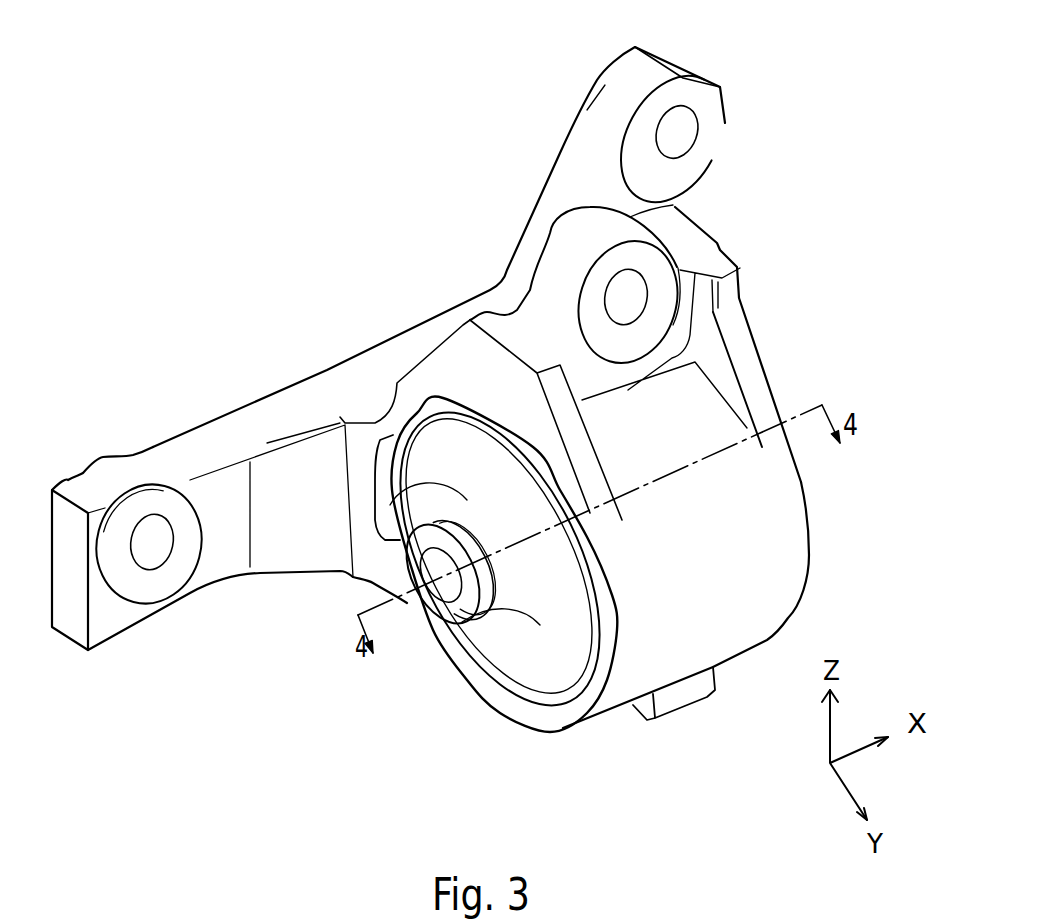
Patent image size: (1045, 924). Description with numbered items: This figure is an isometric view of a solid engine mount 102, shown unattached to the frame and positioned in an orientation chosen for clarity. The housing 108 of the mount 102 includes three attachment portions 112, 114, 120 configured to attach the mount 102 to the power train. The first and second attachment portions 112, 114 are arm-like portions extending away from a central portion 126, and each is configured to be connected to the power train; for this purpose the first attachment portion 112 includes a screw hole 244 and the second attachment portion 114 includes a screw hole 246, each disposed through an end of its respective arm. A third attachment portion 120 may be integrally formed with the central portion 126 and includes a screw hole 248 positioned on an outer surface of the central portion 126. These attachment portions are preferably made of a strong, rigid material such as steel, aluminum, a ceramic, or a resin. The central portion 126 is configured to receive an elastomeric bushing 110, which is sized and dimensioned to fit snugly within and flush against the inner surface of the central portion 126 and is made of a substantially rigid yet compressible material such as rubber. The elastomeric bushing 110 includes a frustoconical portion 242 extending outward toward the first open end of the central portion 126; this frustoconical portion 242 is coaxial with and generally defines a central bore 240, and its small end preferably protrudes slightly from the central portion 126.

The mount 102 is at (337, 169).
The housing 108 is at (792, 517).
The elastomeric bushing 110 is at (527, 660).
The first attachment portion 112 is at (620, 73).
The second attachment portion 114 is at (197, 447).
The third attachment portion 120 is at (677, 212).
The central portion 126 is at (672, 623).
The central bore 240 is at (447, 585).
The frustoconical portion 242 is at (460, 468).
The screw hole 244 is at (690, 128).
The screw hole 246 is at (150, 557).
The screw hole 248 is at (627, 300).